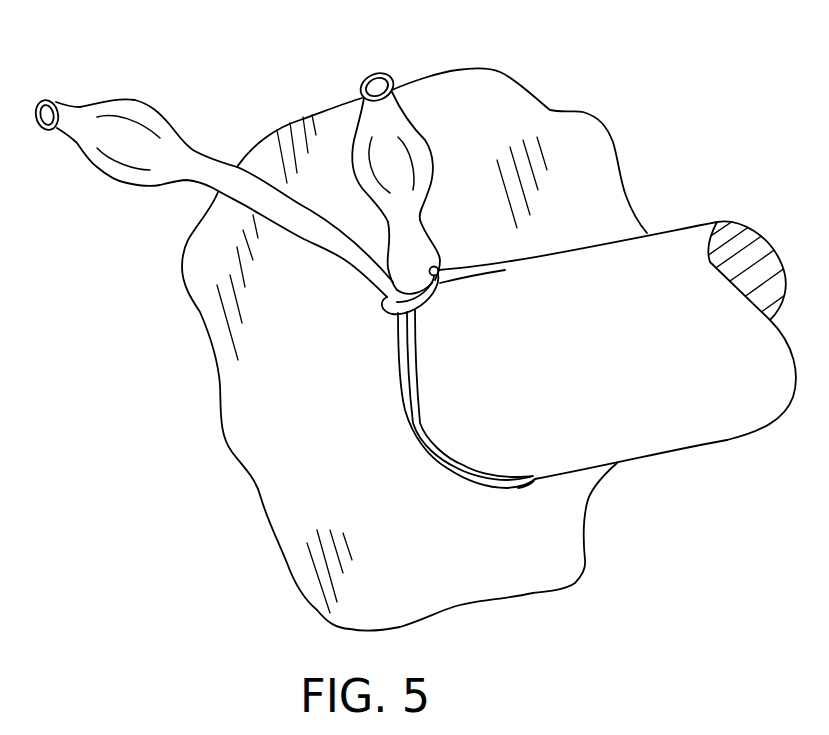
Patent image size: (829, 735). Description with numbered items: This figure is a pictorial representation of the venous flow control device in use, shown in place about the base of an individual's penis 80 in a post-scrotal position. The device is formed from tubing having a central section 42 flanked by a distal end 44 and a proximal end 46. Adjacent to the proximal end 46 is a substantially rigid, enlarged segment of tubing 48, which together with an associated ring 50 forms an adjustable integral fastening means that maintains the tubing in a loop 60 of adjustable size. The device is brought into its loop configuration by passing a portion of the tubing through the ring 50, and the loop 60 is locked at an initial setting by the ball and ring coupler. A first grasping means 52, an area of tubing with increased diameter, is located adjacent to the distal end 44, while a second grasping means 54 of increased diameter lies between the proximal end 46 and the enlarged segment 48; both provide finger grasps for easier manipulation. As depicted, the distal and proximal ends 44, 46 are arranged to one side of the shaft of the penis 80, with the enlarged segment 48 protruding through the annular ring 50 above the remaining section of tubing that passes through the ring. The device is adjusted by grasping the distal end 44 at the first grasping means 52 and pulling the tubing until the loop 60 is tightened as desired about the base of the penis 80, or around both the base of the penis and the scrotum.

The central section 42 is at (398, 380).
The distal end 44 is at (38, 100).
The proximal end 46 is at (380, 78).
The enlarged segment of tubing 48 is at (427, 227).
The ring 50 is at (439, 266).
The first grasping means 52 is at (148, 100).
The second grasping means 54 is at (436, 150).
The loop 60 is at (537, 497).
The penis 80 is at (598, 356).